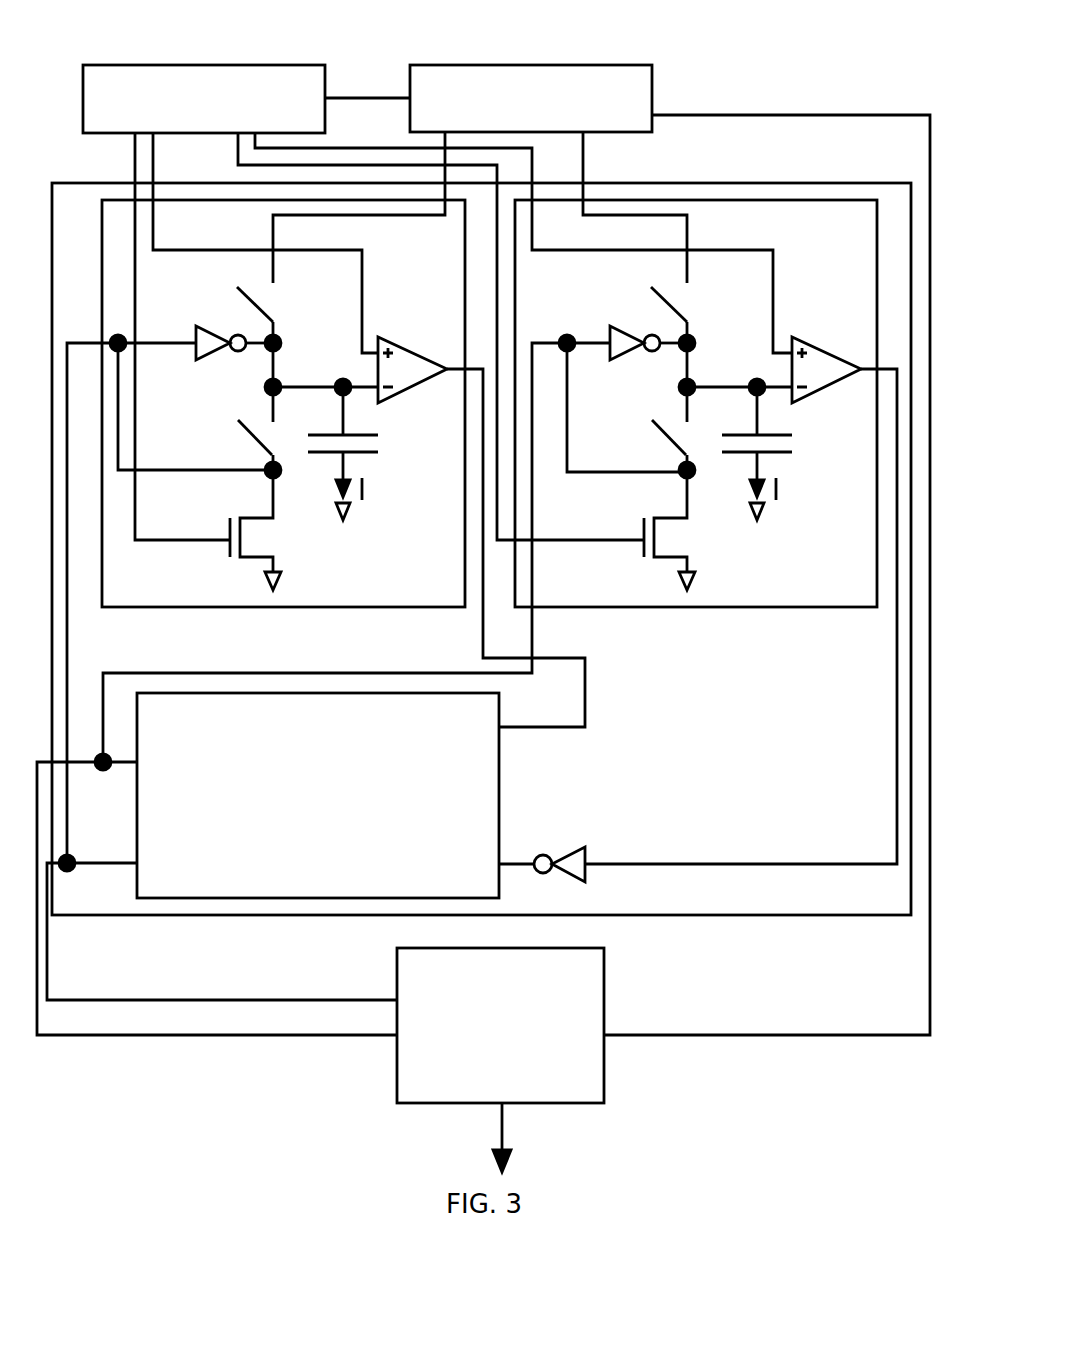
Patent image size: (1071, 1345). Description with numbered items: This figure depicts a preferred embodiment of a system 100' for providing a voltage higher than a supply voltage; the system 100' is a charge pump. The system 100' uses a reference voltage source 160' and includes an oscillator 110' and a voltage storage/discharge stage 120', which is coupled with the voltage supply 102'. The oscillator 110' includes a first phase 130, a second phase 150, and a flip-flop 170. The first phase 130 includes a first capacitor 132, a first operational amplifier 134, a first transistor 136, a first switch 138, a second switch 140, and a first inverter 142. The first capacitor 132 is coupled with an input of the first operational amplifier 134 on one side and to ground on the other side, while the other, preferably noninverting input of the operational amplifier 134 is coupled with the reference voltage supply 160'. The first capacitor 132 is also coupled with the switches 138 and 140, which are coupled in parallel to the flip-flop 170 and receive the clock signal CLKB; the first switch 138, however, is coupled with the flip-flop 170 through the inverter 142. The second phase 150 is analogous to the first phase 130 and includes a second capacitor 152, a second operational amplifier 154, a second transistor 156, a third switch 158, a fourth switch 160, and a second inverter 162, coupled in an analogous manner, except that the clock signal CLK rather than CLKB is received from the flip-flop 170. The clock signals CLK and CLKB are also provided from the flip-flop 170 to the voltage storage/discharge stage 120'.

The system 100' is at (483, 517).
The voltage supply 102' is at (579, 91).
The oscillator 110' is at (481, 525).
The voltage storage/discharge stage 120' is at (548, 1060).
The first phase 130 is at (237, 607).
The first capacitor 132 is at (382, 447).
The first operational amplifier 134 is at (397, 350).
The first transistor 136 is at (275, 541).
The first switch 138 is at (278, 305).
The second switch 140 is at (237, 440).
The first inverter 142 is at (193, 335).
The second phase 150 is at (632, 200).
The second capacitor 152 is at (796, 447).
The second operational amplifier 154 is at (811, 350).
The second transistor 156 is at (689, 541).
The third switch 158 is at (692, 305).
The fourth switch 160 is at (637, 425).
The reference voltage source 160' is at (204, 75).
The second inverter 162 is at (607, 335).
The flip-flop 170 is at (187, 898).